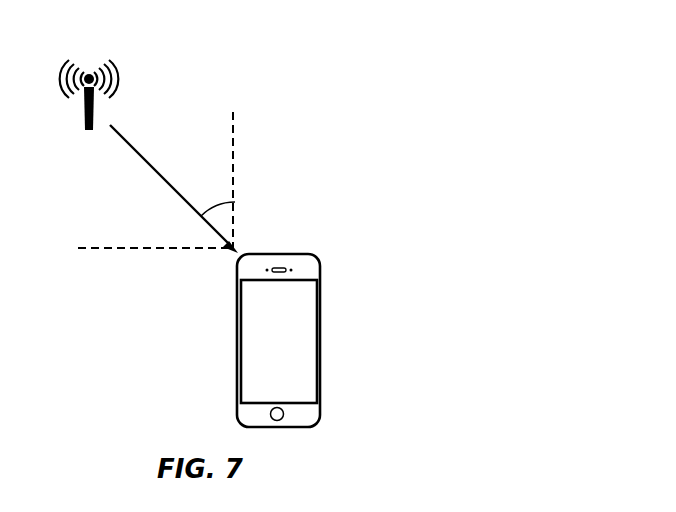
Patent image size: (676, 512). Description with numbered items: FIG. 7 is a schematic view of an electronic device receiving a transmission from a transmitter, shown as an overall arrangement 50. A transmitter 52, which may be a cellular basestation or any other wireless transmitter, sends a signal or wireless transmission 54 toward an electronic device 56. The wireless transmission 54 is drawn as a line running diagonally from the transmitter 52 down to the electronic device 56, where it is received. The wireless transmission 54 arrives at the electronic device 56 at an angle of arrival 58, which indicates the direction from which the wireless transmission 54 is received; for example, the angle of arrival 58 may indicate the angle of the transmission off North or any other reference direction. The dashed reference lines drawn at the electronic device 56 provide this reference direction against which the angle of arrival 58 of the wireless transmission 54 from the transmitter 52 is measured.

The wireless system 50 is at (338, 53).
The transmitter 52 is at (120, 63).
The wireless transmission 54 is at (156, 169).
The electronic device 56 is at (321, 342).
The angle of arrival 58 is at (240, 179).